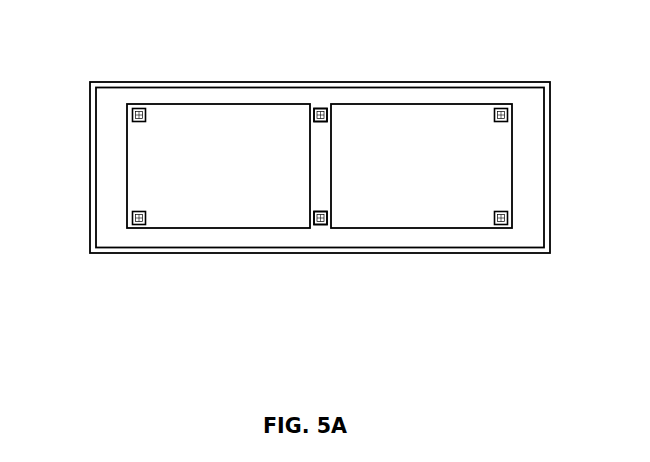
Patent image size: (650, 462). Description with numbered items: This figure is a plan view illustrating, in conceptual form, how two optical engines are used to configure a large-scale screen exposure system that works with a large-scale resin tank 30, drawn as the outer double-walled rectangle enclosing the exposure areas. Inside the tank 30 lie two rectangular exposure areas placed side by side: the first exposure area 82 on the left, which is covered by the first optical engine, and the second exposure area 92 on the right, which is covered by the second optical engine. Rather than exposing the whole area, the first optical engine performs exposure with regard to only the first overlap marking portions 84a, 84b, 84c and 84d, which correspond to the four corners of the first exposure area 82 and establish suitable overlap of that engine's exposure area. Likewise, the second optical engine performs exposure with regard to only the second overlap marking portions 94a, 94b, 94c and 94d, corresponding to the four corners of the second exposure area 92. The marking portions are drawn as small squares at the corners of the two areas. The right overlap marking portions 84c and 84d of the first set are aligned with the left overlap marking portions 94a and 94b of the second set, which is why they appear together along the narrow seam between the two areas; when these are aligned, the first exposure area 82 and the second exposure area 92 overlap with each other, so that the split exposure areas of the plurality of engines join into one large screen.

The large-scale resin tank 30 is at (550, 122).
The first exposure area 82 is at (127, 169).
The second exposure area 92 is at (512, 175).
The first overlap marking portion 84a is at (138, 104).
The first overlap marking portion 84b is at (141, 225).
The first overlap marking portion 84c is at (319, 104).
The first overlap marking portion 84d is at (321, 225).
The second overlap marking portion 94a is at (319, 104).
The second overlap marking portion 94b is at (321, 225).
The second overlap marking portion 94c is at (501, 104).
The second overlap marking portion 94d is at (501, 225).